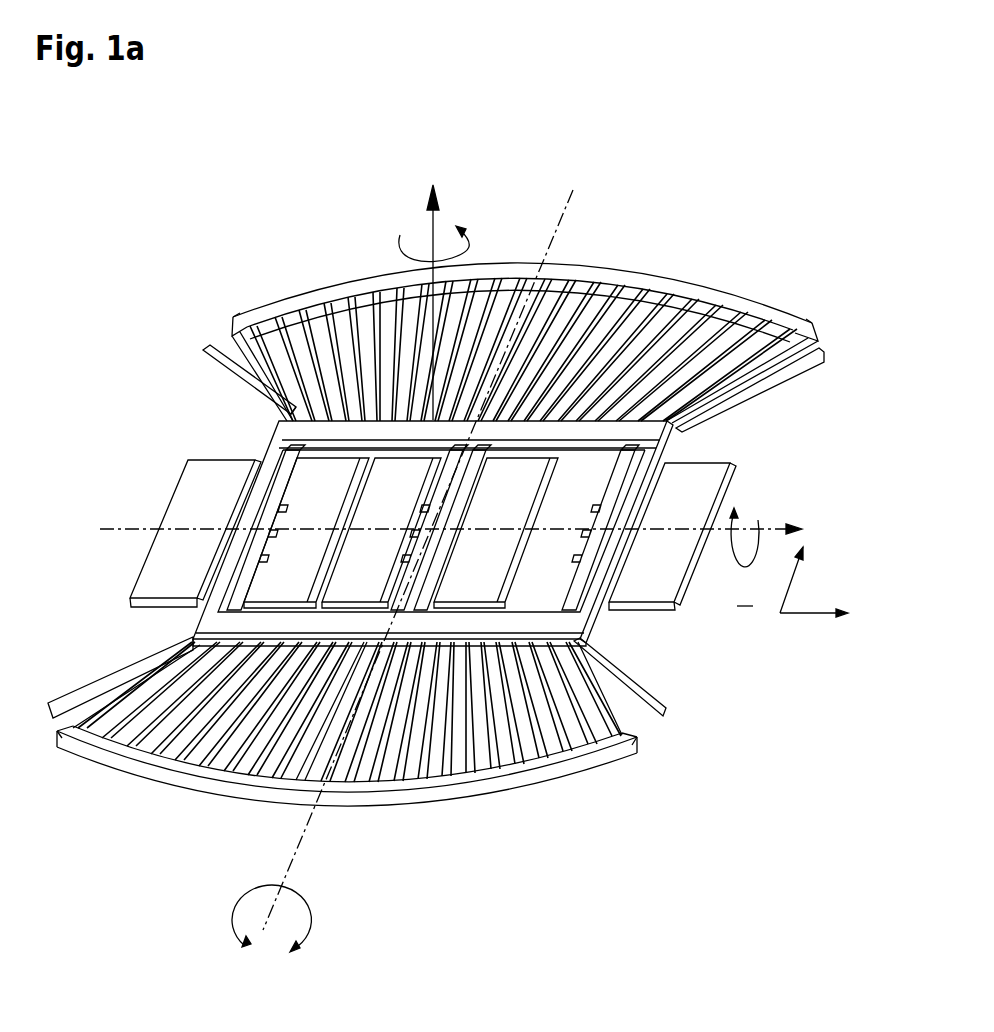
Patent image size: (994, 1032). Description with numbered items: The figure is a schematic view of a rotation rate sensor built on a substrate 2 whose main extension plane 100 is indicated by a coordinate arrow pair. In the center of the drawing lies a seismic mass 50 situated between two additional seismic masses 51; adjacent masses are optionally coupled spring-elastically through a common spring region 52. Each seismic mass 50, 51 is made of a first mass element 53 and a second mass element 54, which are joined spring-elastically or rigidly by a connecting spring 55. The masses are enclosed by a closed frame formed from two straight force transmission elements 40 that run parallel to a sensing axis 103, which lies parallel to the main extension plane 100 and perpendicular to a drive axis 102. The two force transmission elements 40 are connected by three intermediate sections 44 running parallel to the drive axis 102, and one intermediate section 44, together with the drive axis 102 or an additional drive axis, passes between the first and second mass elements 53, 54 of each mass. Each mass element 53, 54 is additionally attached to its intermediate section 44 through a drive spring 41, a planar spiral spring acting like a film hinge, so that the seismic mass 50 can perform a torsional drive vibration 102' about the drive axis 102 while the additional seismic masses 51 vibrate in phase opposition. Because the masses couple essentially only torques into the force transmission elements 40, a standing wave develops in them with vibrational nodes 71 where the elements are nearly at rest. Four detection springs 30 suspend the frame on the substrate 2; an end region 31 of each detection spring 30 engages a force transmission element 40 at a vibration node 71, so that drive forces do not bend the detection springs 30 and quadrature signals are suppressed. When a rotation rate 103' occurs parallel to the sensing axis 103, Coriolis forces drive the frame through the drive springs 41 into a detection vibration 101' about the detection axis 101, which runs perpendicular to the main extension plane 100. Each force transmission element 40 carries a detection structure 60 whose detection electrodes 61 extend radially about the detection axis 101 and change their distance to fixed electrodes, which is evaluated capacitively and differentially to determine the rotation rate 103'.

The substrate 2 is at (745, 593).
The detection spring 30 is at (793, 372).
The end region 31 is at (290, 413).
The force transmission element 40 is at (747, 310).
The drive spring 41 is at (83, 757).
The intermediate section 44 is at (273, 475).
The seismic mass 50 is at (497, 487).
The additional seismic mass 51 is at (277, 563).
The common spring region 52 is at (232, 330).
The first mass element 53 is at (192, 495).
The second mass element 54 is at (265, 585).
The connecting spring 55 is at (369, 747).
The detection structure 60 is at (592, 287).
The detection electrode 61 is at (665, 307).
The vibrational node 71 is at (264, 432).
The main extension plane 100 is at (838, 601).
The detection axis 101 is at (378, 291).
The detection vibration 101' is at (462, 198).
The drive axis 102 is at (402, 568).
The drive vibration 102' is at (345, 937).
The sensing axis 103 is at (472, 509).
The rotation rate 103' is at (764, 513).